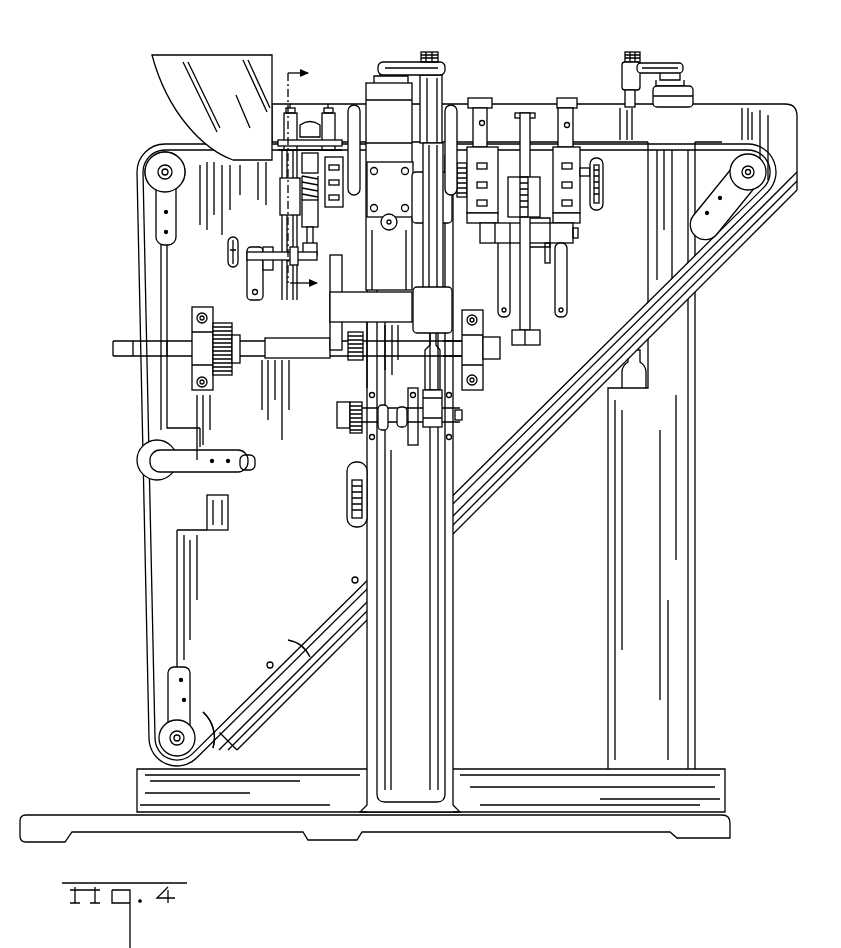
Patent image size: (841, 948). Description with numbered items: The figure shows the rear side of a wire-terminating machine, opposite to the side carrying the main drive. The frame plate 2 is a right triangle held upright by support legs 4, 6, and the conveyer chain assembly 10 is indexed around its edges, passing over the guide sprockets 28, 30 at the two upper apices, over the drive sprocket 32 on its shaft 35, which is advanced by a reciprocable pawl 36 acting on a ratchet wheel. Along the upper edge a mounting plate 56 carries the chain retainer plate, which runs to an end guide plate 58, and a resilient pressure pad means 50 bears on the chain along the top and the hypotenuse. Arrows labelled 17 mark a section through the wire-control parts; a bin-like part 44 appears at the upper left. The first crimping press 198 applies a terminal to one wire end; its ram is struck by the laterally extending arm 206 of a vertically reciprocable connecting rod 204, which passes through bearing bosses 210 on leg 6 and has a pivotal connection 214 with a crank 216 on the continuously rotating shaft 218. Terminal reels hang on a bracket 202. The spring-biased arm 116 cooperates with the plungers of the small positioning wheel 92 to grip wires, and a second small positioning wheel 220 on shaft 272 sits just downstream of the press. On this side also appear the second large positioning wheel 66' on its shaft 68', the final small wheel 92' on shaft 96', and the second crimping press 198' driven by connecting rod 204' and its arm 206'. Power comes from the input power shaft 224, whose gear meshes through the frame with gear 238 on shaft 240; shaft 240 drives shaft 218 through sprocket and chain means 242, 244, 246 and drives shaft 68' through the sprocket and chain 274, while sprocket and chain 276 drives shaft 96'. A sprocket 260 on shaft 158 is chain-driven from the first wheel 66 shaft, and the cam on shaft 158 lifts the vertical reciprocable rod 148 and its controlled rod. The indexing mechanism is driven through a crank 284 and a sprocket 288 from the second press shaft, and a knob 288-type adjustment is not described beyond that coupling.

The frame plate 2 is at (305, 650).
The support leg 4 is at (670, 580).
The support leg 6 is at (442, 632).
The conveyer chain assembly 10 is at (137, 572).
The section line 17 is at (310, 185).
The guide sprocket 28 is at (157, 172).
The guide sprocket 30 is at (737, 167).
The drive sprocket 32 is at (203, 733).
The shaft 35 is at (172, 740).
The reciprocable pawl 36 is at (186, 705).
The hopper 44 is at (218, 72).
The resilient pressure pad means 50 is at (713, 275).
The mounting plate 56 is at (715, 112).
The end guide plate 58 is at (780, 105).
The first positioning wheel 66 is at (268, 225).
The second large positioning wheel 66' is at (539, 343).
The shaft 68' is at (552, 267).
The small positioning wheel 92 is at (333, 190).
The final small wheel 92' is at (591, 188).
The shaft 96' is at (534, 221).
The arm 116 is at (484, 122).
The vertical reciprocable rod 148 is at (317, 241).
The shaft 158 is at (255, 247).
The crimping press 198 is at (374, 180).
The second crimping press 198' is at (692, 82).
The bracket 202 is at (342, 313).
The connecting rod 204 is at (454, 106).
The connecting rod 204' is at (606, 79).
The laterally extending arm 206 is at (411, 53).
The arm 206' is at (677, 55).
The bearing bosses 210 is at (442, 293).
The pivotal connection 214 is at (438, 332).
The crank 216 is at (435, 430).
The shaft 218 is at (465, 410).
The second small positioning wheel 220 is at (473, 194).
The input power shaft 224 is at (113, 345).
The gear 238 is at (217, 390).
The shaft 240 is at (305, 345).
The sprocket and chain means 242 is at (353, 360).
The sprocket and chain means 244 is at (352, 385).
The sprocket and chain means 246 is at (350, 437).
The sprocket 260 is at (230, 258).
The shaft 272 is at (498, 163).
The sprocket and chain 274 is at (486, 365).
The sprocket and chain 276 is at (602, 166).
The crank 284 is at (213, 510).
The sprocket 288 is at (348, 517).